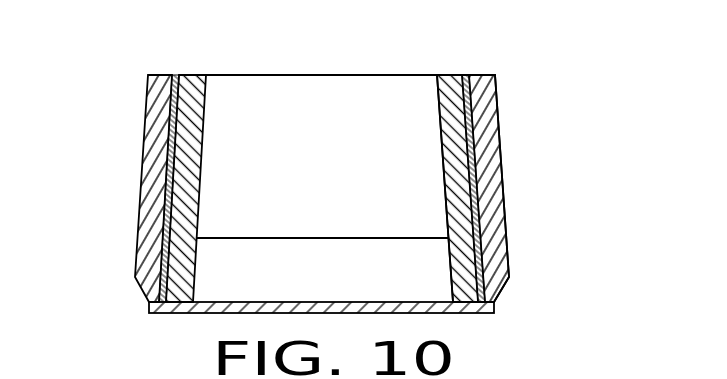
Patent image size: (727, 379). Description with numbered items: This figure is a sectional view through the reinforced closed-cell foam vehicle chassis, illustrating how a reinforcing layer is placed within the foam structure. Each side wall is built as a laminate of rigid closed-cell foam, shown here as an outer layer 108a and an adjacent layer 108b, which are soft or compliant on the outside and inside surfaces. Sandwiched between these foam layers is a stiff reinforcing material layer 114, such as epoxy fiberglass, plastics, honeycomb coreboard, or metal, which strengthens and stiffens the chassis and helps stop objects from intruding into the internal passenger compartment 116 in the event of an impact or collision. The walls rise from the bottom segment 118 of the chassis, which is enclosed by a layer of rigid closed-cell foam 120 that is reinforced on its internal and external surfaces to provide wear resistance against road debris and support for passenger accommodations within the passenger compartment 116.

The outer layer of rigid closed-cell foam 108a is at (143, 137).
The layer of rigid closed-cell foam 108b is at (200, 147).
The reinforcing material layer 114 is at (177, 75).
The internal passenger compartment 116 is at (346, 205).
The bottom segment 118 is at (472, 328).
The layer of rigid closed-cell foam 120 is at (501, 162).